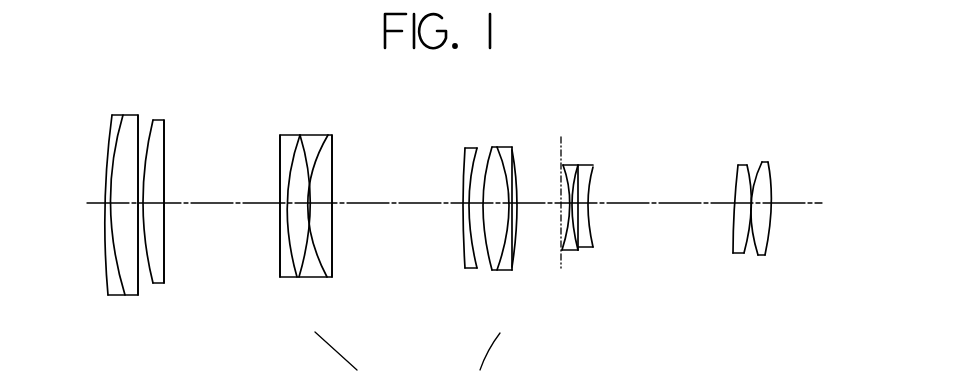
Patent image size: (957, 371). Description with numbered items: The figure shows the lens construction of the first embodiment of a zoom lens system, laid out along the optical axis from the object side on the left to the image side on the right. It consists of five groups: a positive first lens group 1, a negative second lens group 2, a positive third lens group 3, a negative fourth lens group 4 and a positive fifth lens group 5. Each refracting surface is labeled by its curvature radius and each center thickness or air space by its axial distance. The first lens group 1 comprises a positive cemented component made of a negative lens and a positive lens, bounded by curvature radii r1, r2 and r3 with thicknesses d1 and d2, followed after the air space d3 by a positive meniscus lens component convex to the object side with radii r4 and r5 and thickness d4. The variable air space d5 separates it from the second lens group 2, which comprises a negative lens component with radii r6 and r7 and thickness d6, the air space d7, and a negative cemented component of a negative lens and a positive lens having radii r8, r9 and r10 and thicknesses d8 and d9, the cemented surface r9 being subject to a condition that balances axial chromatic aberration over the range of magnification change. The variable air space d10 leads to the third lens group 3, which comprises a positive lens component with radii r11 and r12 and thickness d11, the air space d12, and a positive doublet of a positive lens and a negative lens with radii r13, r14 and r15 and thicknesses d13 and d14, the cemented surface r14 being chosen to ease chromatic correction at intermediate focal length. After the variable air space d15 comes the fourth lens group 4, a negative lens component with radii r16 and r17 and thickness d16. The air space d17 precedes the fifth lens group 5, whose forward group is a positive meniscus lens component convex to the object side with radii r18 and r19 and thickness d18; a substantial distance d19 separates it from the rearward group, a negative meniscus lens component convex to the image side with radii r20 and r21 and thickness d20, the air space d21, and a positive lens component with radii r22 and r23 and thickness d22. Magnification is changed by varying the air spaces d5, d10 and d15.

The first lens group 1 is at (175, 106).
The second lens group 2 is at (343, 136).
The third lens group 3 is at (510, 136).
The fourth lens group 4 is at (590, 136).
The fifth lens group 5 is at (772, 136).
The curvature radius of first lens surface r1 is at (108, 286).
The curvature radius of second lens surface r2 is at (125, 287).
The curvature radius of third lens surface r3 is at (137, 296).
The curvature radius of fourth lens surface r4 is at (152, 284).
The curvature radius of fifth lens surface r5 is at (166, 284).
The curvature radius of sixth lens surface r6 is at (280, 262).
The curvature radius of seventh lens surface r7 is at (297, 255).
The curvature radius of eighth lens surface r8 is at (309, 250).
The curvature radius of cemented surface of second lens group r9 is at (322, 255).
The curvature radius of tenth lens surface r10 is at (332, 245).
The curvature radius of eleventh lens surface r11 is at (466, 265).
The curvature radius of twelfth lens surface r12 is at (476, 265).
The curvature radius of thirteenth lens surface r13 is at (492, 269).
The curvature radius of cemented surface of third lens group doublet r14 is at (503, 270).
The curvature radius of fifteenth lens surface r15 is at (517, 245).
The curvature radius of sixteenth lens surface r16 is at (562, 251).
The curvature radius of seventeenth lens surface r17 is at (577, 251).
The curvature radius of eighteenth lens surface r18 is at (595, 249).
The curvature radius of nineteenth lens surface r19 is at (593, 240).
The curvature radius of twentieth lens surface r20 is at (734, 254).
The curvature radius of twenty-first lens surface r21 is at (744, 255).
The curvature radius of twenty-second lens surface r22 is at (759, 256).
The curvature radius of twenty-third lens surface r23 is at (766, 254).
The center thickness of first lens d1 is at (106, 199).
The center thickness of second lens d2 is at (125, 192).
The air space between first group doublet and meniscus lens d3 is at (136, 192).
The center thickness of positive meniscus lens d4 is at (155, 192).
The variable air space between first and second lens groups d5 is at (204, 190).
The center thickness of second group negative lens d6 is at (283, 203).
The air space within second lens group d7 is at (296, 191).
The center thickness of second group doublet negative lens d8 is at (309, 200).
The center thickness of second group doublet positive lens d9 is at (323, 191).
The variable air space between second and third lens groups d10 is at (413, 192).
The center thickness of third group positive lens d11 is at (466, 201).
The air space within third lens group d12 is at (472, 206).
The center thickness of third group doublet positive lens d13 is at (495, 194).
The center thickness of third group doublet negative lens d14 is at (512, 184).
The variable air space between third and fourth lens groups d15 is at (551, 192).
The center thickness of fourth group negative lens d16 is at (570, 207).
The air space between fourth and fifth lens groups d17 is at (579, 174).
The center thickness of forward positive meniscus lens d18 is at (585, 191).
The air space between forward and rearward groups of fifth lens group d19 is at (645, 192).
The center thickness of rearward negative meniscus lens d20 is at (742, 202).
The air space within rearward group of fifth lens group d21 is at (752, 200).
The center thickness of rearward positive lens d22 is at (762, 191).